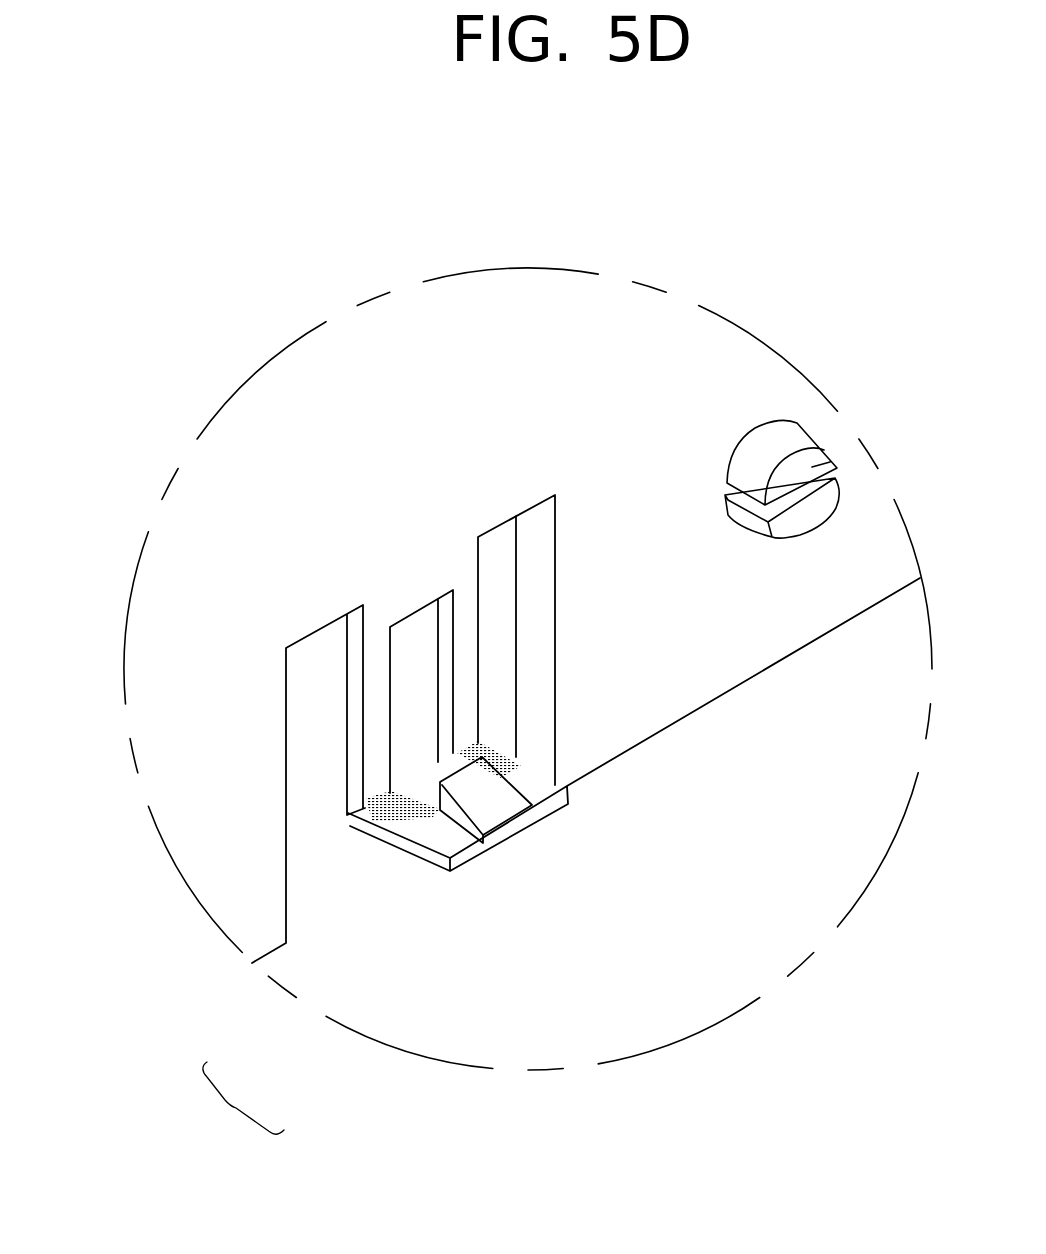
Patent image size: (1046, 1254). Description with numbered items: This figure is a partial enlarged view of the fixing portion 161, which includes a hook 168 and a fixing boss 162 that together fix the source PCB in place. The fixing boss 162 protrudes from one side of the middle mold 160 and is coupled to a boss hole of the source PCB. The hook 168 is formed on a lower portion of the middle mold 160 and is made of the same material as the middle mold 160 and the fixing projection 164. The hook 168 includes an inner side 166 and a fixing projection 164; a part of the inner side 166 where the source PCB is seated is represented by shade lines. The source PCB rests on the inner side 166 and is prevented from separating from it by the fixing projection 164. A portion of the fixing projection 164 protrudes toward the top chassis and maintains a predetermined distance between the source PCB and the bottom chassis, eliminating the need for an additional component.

The middle mold 160 is at (715, 362).
The fixing portion 161 is at (302, 342).
The fixing boss 162 is at (838, 458).
The fixing projection 164 is at (480, 802).
The inner side 166 is at (368, 815).
The hook 168 is at (228, 1106).